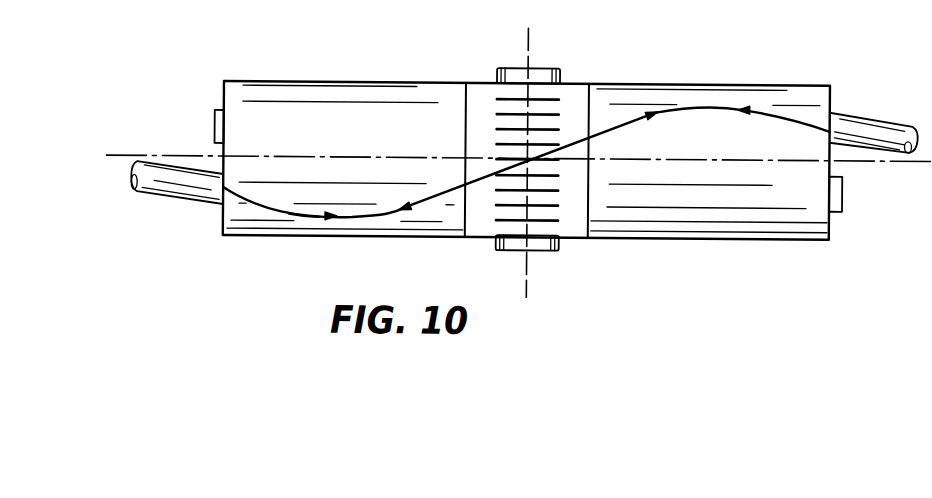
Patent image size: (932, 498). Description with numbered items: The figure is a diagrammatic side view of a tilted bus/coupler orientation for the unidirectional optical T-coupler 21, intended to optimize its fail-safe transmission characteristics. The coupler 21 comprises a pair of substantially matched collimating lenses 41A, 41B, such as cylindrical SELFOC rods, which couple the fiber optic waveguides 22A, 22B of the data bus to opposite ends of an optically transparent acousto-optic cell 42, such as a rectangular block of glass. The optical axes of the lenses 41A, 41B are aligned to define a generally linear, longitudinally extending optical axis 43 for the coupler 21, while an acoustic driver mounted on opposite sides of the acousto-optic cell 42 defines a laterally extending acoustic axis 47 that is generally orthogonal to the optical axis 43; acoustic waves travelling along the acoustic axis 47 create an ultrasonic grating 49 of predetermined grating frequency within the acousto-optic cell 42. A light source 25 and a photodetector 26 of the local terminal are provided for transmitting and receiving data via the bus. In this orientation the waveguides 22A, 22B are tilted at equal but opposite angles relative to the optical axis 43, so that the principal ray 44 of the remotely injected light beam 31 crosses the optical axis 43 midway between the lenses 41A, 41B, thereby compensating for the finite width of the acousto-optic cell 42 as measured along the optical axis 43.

The unidirectional optical T-coupler 21 is at (718, 246).
The fiber optic waveguide 22A is at (168, 189).
The fiber optic waveguide 22B is at (877, 125).
The light source 25 is at (213, 119).
The photodetector 26 is at (843, 190).
The remotely injected light beam 31 is at (305, 213).
The collimating lens 41A is at (346, 96).
The collimating lens 41B is at (793, 90).
The acousto-optic cell 42 is at (575, 93).
The optical axis 43 is at (125, 157).
The principal ray 44 is at (634, 109).
The acoustic axis 47 is at (529, 39).
The ultrasonic grating 49 is at (501, 96).